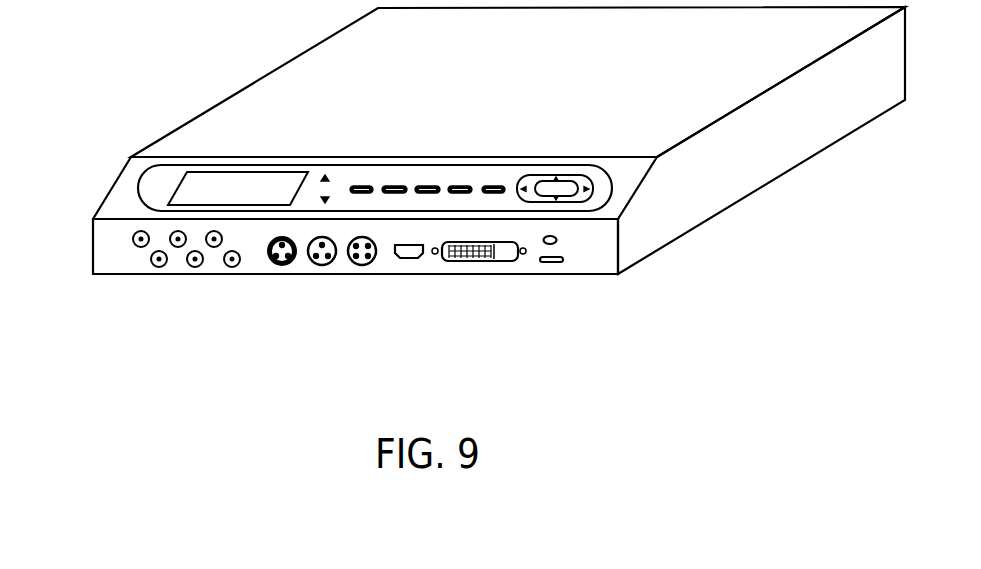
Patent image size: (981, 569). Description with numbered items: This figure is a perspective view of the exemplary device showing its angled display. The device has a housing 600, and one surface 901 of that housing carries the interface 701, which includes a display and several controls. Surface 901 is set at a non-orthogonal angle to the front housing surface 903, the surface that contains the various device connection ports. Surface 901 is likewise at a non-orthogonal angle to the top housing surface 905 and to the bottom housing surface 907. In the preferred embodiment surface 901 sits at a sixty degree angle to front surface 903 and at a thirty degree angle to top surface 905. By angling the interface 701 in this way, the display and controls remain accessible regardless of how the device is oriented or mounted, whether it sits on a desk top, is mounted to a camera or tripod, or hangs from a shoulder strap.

The housing 600 is at (500, 83).
The interface 701 is at (450, 166).
The surface 901 is at (125, 196).
The front housing surface 903 is at (600, 250).
The top housing surface 905 is at (649, 95).
The bottom housing surface 907 is at (310, 292).